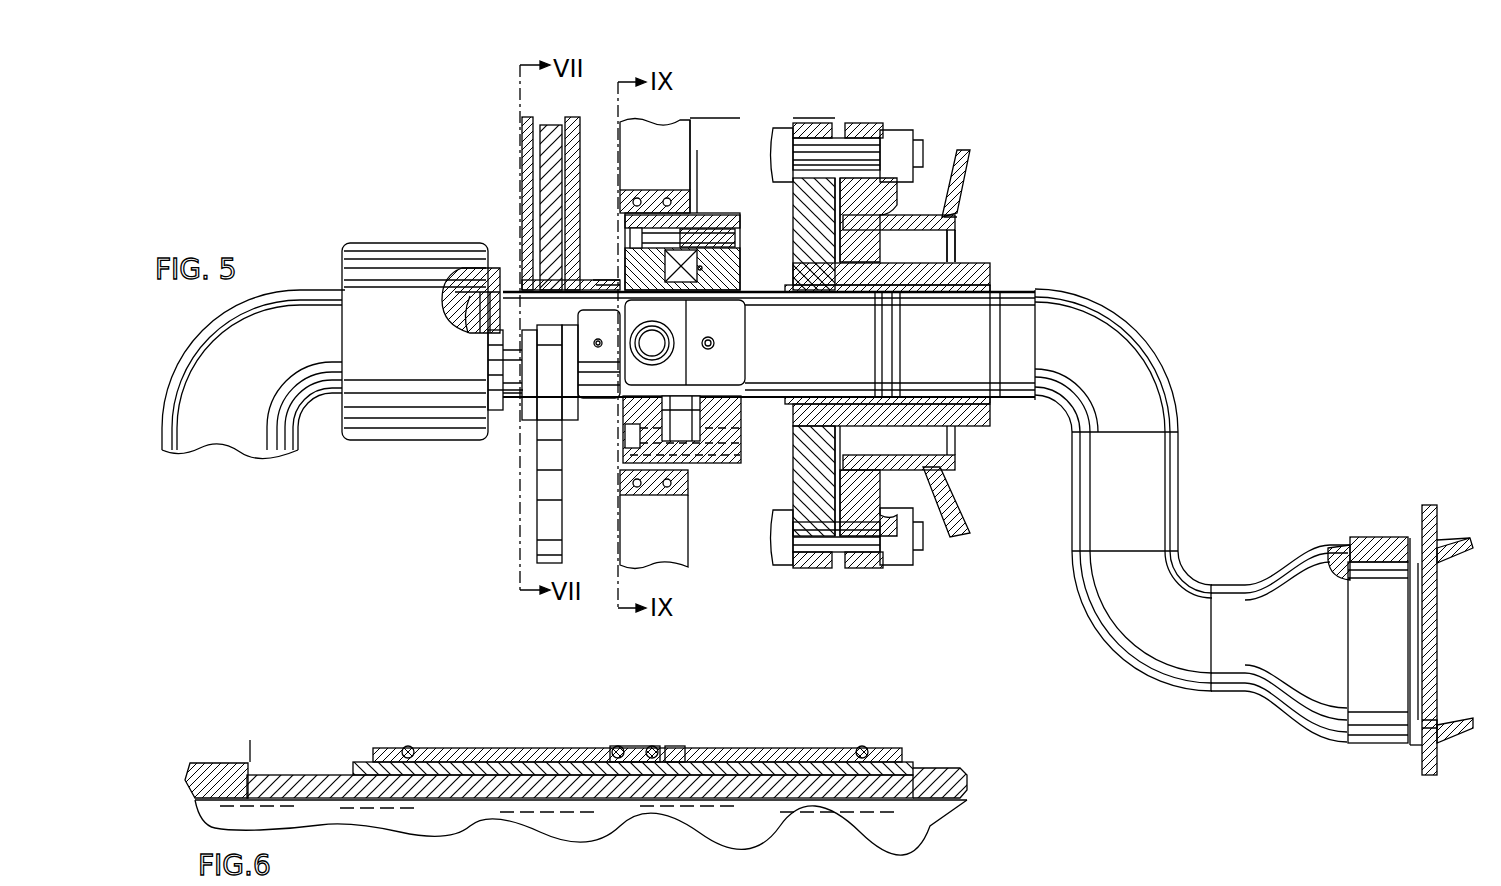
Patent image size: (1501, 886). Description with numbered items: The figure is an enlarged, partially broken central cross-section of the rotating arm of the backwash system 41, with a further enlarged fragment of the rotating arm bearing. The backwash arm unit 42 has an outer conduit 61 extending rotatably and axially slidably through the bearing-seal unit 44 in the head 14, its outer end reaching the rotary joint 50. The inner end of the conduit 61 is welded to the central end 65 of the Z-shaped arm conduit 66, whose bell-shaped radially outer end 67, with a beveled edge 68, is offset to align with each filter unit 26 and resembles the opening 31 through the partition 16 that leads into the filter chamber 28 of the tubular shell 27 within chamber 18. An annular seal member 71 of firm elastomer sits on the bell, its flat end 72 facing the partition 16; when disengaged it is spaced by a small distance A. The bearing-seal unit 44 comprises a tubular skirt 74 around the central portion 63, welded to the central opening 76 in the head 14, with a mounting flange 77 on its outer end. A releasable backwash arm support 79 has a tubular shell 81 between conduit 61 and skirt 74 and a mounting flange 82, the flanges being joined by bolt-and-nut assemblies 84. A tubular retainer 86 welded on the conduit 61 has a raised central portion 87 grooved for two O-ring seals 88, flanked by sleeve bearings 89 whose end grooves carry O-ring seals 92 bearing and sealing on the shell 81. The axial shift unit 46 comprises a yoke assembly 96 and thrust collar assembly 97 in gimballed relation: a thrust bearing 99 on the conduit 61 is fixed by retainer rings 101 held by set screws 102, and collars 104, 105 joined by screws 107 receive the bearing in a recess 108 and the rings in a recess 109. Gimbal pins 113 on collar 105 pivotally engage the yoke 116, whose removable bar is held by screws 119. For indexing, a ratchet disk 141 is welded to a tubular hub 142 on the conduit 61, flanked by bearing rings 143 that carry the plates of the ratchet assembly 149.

In FIG. 5, the head 14 is at (950, 165).
In FIG. 5, the partition 16 is at (1432, 775).
In FIG. 5, the chamber 18 is at (973, 185).
In FIG. 5, the filter units 26 is at (1458, 532).
In FIG. 5, the tubular shell 27 is at (1455, 740).
In FIG. 5, the filter chamber 28 is at (1455, 555).
In FIG. 5, the opening 31 is at (1428, 722).
In FIG. 5, the backwash system 41 is at (812, 86).
In FIG. 5, the backwash arm unit 42 is at (1135, 672).
In FIG. 6, the backwash arm unit 42 is at (242, 712).
In FIG. 5, the bearing-seal unit 44 is at (840, 115).
In FIG. 5, the axial shift unit 46 is at (688, 90).
In FIG. 5, the rotary joint 50 is at (333, 238).
In FIG. 5, the outer conduit 61 is at (782, 398).
In FIG. 6, the outer conduit 61 is at (300, 782).
In FIG. 5, the central portion 63 is at (1012, 300).
In FIG. 5, the central end 65 is at (1078, 310).
In FIG. 6, the central end 65 is at (225, 770).
In FIG. 5, the arm conduit 66 is at (1180, 488).
In FIG. 5, the radially outer end 67 is at (1300, 712).
In FIG. 5, the beveled edge 68 is at (1400, 538).
In FIG. 5, the annular seal member 71 is at (1380, 735).
In FIG. 5, the end 72 is at (1415, 560).
In FIG. 5, the tubular skirt 74 is at (945, 540).
In FIG. 5, the central opening 76 is at (940, 470).
In FIG. 5, the mounting flange 77 is at (868, 565).
In FIG. 5, the backwash arm support 79 is at (800, 118).
In FIG. 5, the tubular shell 81 is at (950, 412).
In FIG. 5, the mounting flange 82 is at (808, 565).
In FIG. 5, the bolt-and-nut assemblies 84 is at (793, 160).
In FIG. 5, the tubular retainer 86 is at (975, 385).
In FIG. 6, the tubular retainer 86 is at (550, 762).
In FIG. 6, the central portion 87 is at (668, 750).
In FIG. 6, the O-ring seals 88 is at (652, 746).
In FIG. 6, the sleeve bearings 89 is at (460, 752).
In FIG. 6, the O-ring seals 92 is at (407, 745).
In FIG. 5, the yoke assembly 96 is at (618, 165).
In FIG. 5, the thrust collar assembly 97 is at (697, 192).
In FIG. 5, the thrust bearing 99 is at (700, 240).
In FIG. 5, the retainer rings 101 is at (628, 283).
In FIG. 5, the set screws 102 is at (714, 344).
In FIG. 5, the collar 104 is at (718, 455).
In FIG. 5, the collar 105 is at (650, 458).
In FIG. 5, the screws 107 is at (700, 245).
In FIG. 5, the recess 108 is at (715, 243).
In FIG. 5, the recess 109 is at (648, 415).
In FIG. 5, the gimbal pins 113 is at (655, 342).
In FIG. 5, the yoke 116 is at (616, 515).
In FIG. 5, the screws 119 is at (648, 480).
In FIG. 5, the ratchet disk 141 is at (548, 194).
In FIG. 5, the tubular hub 142 is at (580, 280).
In FIG. 5, the bearing rings 143 is at (515, 280).
In FIG. 5, the ratchet assembly 149 is at (527, 180).
In FIG. 5, the separation distance A is at (1415, 748).